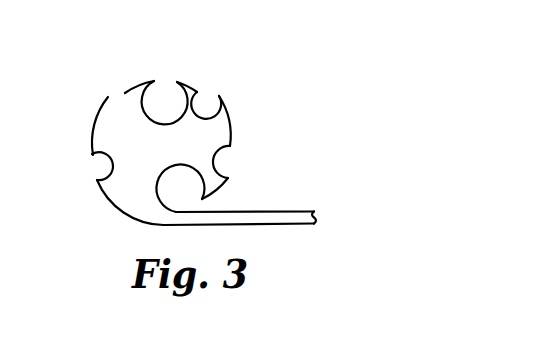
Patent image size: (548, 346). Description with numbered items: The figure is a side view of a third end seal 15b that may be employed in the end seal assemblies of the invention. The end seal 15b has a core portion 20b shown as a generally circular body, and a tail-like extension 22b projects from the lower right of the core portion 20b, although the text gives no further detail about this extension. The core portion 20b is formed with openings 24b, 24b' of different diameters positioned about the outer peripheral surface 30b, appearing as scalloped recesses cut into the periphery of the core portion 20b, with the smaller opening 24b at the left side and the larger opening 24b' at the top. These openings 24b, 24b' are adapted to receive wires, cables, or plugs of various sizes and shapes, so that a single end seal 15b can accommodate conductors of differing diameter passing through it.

The end seal 15b is at (191, 129).
The core portion 20b is at (169, 129).
The tail portion 22b is at (287, 218).
The opening 24b is at (67, 167).
The opening 24b' is at (164, 75).
The outer peripheral surface 30b is at (102, 193).